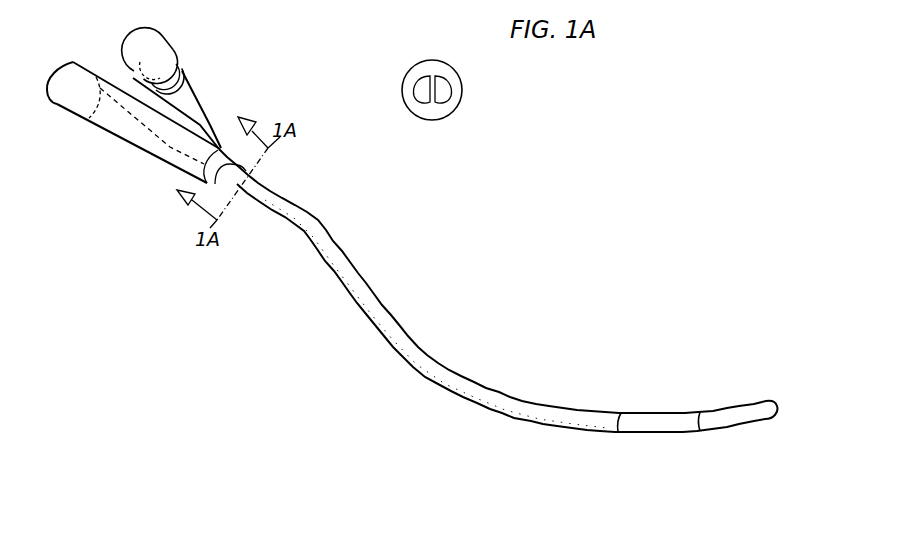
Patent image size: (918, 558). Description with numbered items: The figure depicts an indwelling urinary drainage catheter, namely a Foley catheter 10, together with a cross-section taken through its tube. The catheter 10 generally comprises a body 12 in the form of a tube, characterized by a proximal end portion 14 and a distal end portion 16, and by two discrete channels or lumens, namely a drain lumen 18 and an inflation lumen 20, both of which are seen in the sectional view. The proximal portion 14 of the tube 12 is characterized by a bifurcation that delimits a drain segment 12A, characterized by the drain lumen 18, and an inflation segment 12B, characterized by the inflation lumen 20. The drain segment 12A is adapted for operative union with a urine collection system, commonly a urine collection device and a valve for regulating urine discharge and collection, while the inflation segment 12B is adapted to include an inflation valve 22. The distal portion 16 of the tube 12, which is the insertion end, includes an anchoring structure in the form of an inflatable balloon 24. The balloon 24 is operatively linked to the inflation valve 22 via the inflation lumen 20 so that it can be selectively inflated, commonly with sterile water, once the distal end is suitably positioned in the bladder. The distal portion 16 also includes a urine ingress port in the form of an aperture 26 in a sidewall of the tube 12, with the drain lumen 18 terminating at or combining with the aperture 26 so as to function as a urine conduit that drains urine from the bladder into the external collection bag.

In FIG. 1, the Foley catheter 10 is at (487, 333).
In FIG. 1, the body 12 is at (313, 218).
In FIG. 1A, the body 12 is at (457, 108).
In FIG. 1, the drain segment 12A is at (127, 125).
In FIG. 1, the inflation segment 12B is at (192, 92).
In FIG. 1, the proximal end portion 14 is at (97, 63).
In FIG. 1, the distal end portion 16 is at (750, 404).
In FIG. 1, the drain lumen 18 is at (641, 413).
In FIG. 1A, the drain lumen 18 is at (403, 100).
In FIG. 1, the inflation lumen 20 is at (183, 56).
In FIG. 1A, the inflation lumen 20 is at (461, 77).
In FIG. 1, the inflation valve 22 is at (183, 42).
In FIG. 1, the inflatable balloon 24 is at (659, 388).
In FIG. 1, the aperture 26 is at (736, 410).